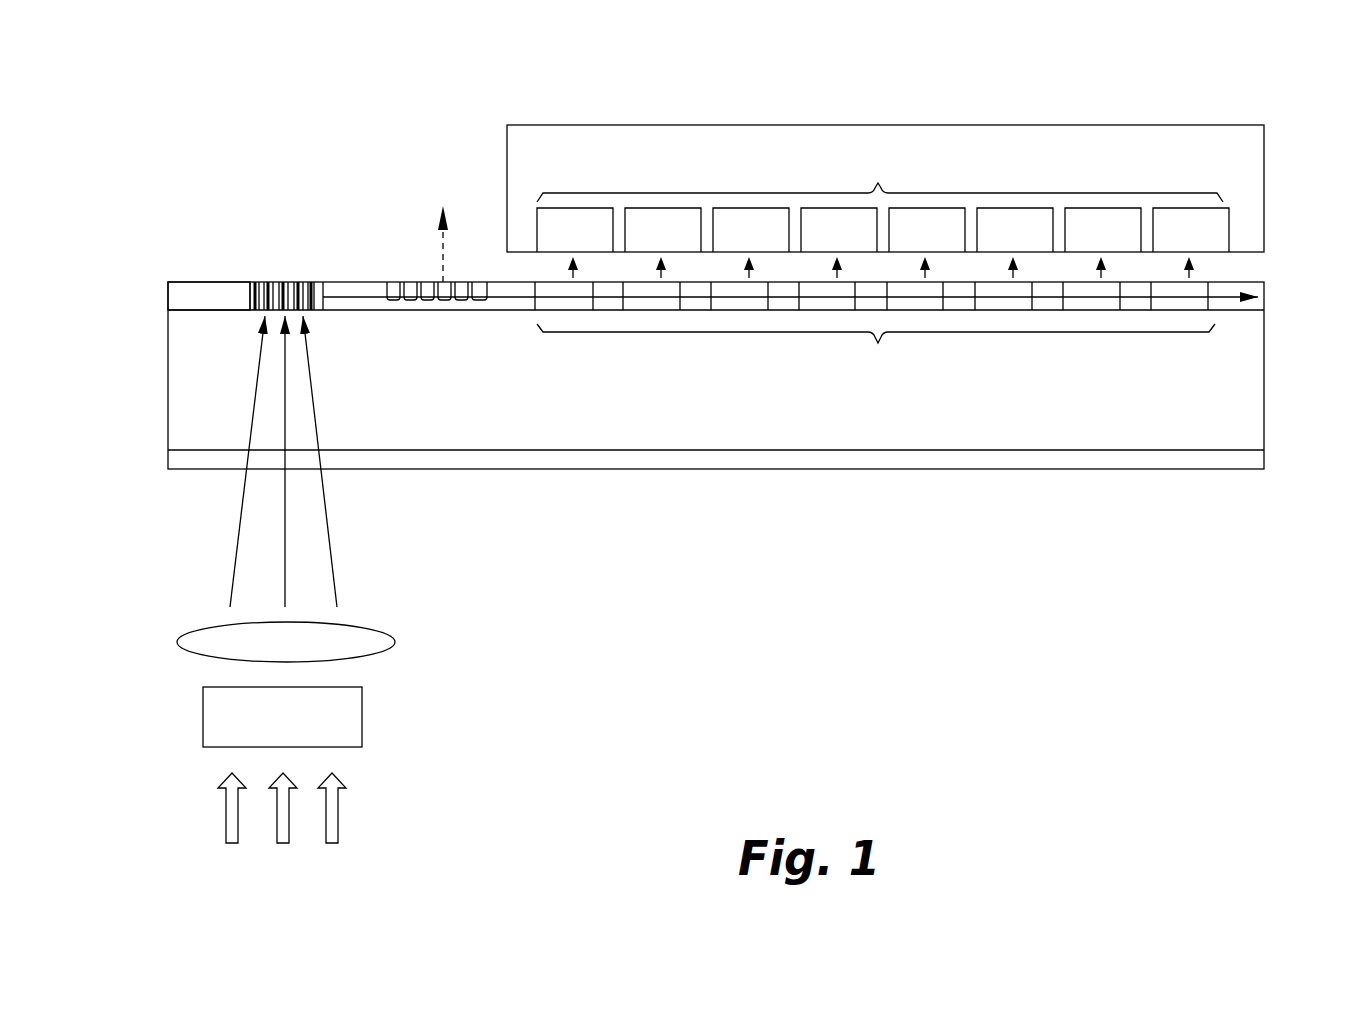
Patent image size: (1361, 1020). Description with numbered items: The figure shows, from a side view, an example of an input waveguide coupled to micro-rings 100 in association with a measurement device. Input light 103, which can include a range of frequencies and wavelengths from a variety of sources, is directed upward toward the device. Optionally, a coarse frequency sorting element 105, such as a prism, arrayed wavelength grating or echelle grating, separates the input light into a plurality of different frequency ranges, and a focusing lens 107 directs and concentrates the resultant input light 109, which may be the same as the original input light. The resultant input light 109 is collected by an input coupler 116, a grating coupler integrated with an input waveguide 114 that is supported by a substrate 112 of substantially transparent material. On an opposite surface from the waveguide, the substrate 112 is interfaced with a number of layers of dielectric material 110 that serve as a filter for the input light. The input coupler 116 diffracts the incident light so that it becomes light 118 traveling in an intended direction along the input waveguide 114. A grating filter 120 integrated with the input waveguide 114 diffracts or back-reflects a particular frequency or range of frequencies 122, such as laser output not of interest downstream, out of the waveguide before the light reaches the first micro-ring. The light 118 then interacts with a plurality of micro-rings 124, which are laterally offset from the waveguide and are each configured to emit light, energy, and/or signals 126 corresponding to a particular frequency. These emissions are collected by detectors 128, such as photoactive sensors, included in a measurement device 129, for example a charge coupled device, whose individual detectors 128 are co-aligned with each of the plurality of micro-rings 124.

The input waveguide coupled to micro-rings 100 is at (222, 103).
The input light 103 is at (349, 822).
The coarse frequency sorting element 105 is at (369, 713).
The focusing lens 107 is at (406, 640).
The resultant input light 109 is at (343, 530).
The layers of dielectric material 110 is at (725, 464).
The substrate 112 is at (778, 428).
The input waveguide 114 is at (182, 281).
The input coupler 116 is at (273, 281).
The light traveling along the input waveguide 118 is at (361, 296).
The grating filter 120 is at (413, 279).
The particular frequency or range of frequencies 122 is at (452, 222).
The plurality of micro-rings 124 is at (875, 327).
The emitted light, energy, and/or signals 126 is at (1246, 266).
The detectors 128 is at (883, 202).
The measurement device 129 is at (1066, 165).